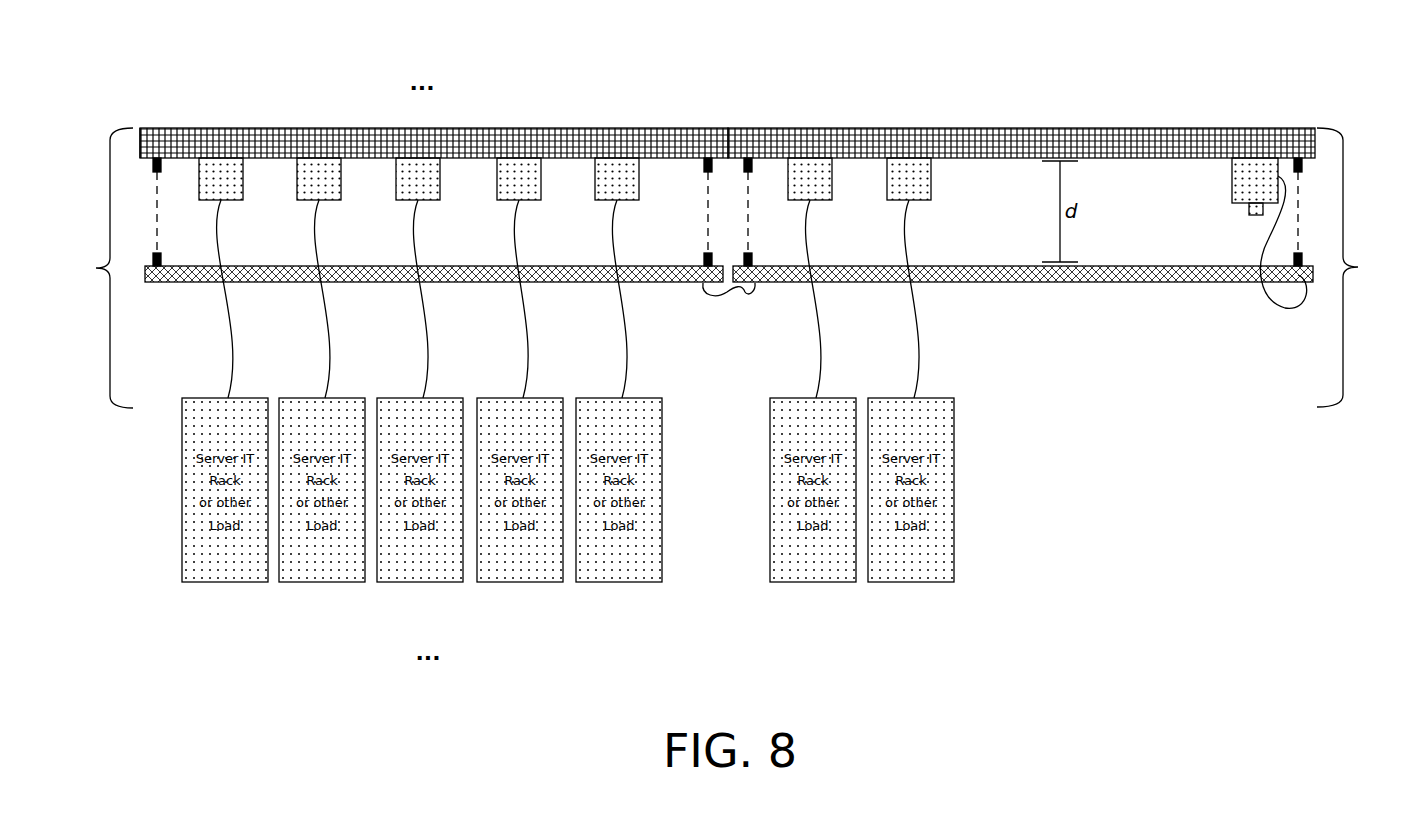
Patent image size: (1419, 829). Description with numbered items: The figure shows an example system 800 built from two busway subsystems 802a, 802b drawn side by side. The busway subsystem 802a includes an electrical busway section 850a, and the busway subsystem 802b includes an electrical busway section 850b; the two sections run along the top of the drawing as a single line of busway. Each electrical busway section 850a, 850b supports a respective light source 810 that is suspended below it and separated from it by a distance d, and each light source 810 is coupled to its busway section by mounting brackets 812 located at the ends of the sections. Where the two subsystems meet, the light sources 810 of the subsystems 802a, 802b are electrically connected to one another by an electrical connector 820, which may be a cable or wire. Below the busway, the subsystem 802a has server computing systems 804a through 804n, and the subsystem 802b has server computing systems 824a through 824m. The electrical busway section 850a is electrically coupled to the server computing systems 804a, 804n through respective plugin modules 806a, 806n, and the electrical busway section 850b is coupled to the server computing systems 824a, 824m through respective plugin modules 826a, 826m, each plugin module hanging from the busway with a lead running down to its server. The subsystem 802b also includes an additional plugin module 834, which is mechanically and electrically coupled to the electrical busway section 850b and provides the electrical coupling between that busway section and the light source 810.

The system 800 is at (163, 78).
The busway subsystem 802a is at (85, 268).
The busway subsystem 802b is at (1366, 267).
The server computing system 804a is at (218, 595).
The server computing system 804n is at (620, 595).
The plugin module 806a is at (229, 149).
The plugin module 806n is at (600, 153).
The light source 810 is at (655, 295).
The mounting bracket 812 is at (1317, 163).
The electrical connector 820 is at (741, 308).
The server computing system 824a is at (810, 595).
The server computing system 824m is at (908, 595).
The plugin module 826a is at (839, 200).
The plugin module 826m is at (939, 200).
The plugin module 834 is at (1221, 192).
The electrical busway section 850a is at (685, 118).
The electrical busway section 850b is at (823, 118).